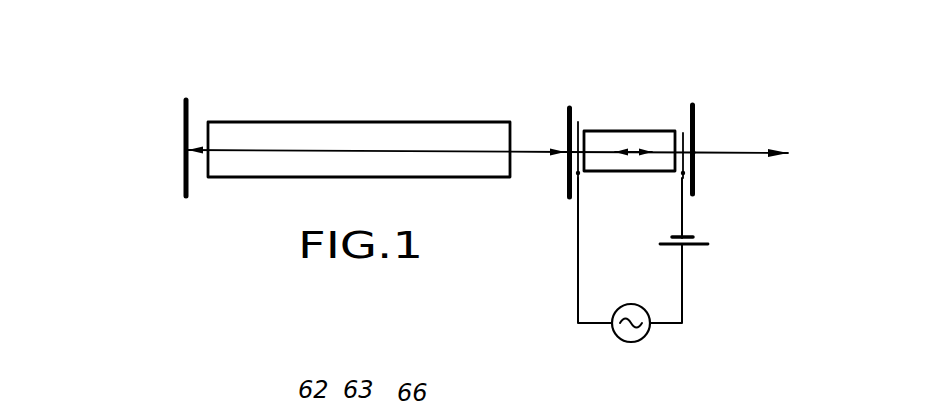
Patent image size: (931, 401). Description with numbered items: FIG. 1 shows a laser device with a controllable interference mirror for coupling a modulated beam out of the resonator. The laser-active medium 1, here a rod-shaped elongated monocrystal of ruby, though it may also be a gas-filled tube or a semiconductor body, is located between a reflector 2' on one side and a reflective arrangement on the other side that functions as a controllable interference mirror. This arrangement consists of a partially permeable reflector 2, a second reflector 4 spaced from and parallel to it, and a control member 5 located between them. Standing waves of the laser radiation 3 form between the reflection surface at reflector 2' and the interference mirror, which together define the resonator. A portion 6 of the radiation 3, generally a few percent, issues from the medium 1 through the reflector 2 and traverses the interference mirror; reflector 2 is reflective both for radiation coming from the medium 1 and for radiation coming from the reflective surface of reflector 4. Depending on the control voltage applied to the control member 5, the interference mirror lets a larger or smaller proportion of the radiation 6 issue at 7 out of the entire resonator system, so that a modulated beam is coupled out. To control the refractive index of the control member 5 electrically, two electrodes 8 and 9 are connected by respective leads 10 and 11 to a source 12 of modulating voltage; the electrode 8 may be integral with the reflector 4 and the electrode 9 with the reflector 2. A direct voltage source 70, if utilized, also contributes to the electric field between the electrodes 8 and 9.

The laser-active medium 1 is at (299, 131).
The partially permeable reflector 2 is at (527, 108).
The reflector 2' is at (107, 148).
The radiation 3 is at (246, 151).
The second reflector 4 is at (694, 124).
The control member 5 is at (722, 92).
The portion of the radiation 6 is at (658, 153).
The emitted radiation 7 is at (742, 153).
The electrode 8 is at (682, 163).
The electrode 9 is at (590, 109).
The lead 10 is at (681, 282).
The lead 11 is at (586, 262).
The source of modulating voltage 12 is at (647, 336).
The direct voltage source 70 is at (693, 242).